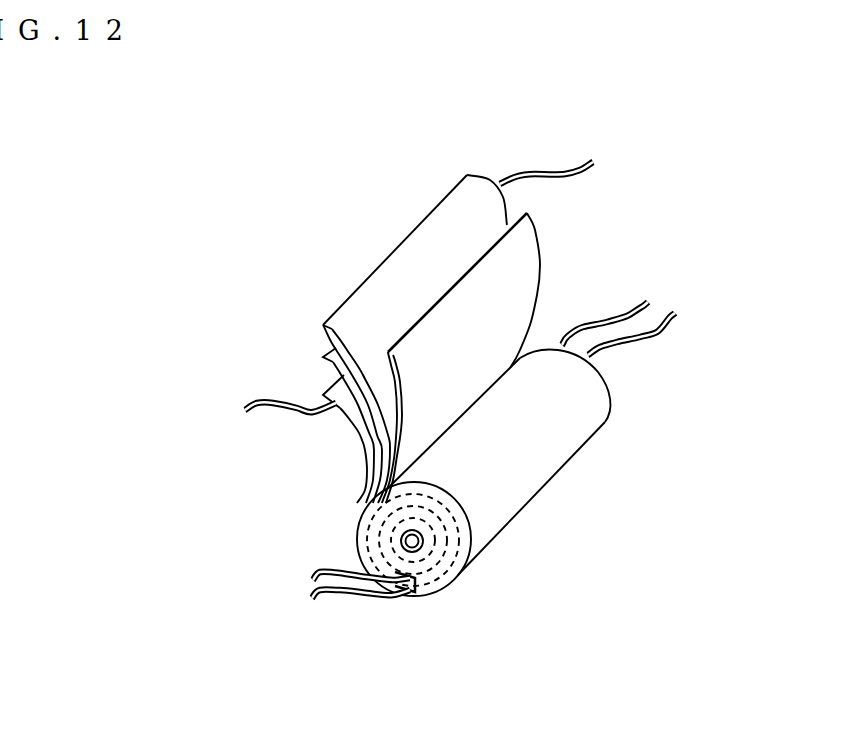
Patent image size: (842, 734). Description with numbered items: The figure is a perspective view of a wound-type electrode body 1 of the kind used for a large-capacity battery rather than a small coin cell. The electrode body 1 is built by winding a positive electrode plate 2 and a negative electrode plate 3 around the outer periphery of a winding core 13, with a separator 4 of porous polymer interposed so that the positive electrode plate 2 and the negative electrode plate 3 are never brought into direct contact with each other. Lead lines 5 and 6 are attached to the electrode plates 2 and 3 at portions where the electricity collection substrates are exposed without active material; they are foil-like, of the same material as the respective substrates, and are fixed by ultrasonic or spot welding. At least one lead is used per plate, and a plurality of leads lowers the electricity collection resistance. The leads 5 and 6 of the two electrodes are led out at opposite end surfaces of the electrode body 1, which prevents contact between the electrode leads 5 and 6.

The wound-type electrode body 1 is at (565, 489).
The positive electrode plate 2 is at (365, 437).
The negative electrode plate 3 is at (404, 262).
The separator 4 is at (322, 352).
The lead line 5 is at (262, 402).
The lead line 6 is at (550, 178).
The winding core 13 is at (421, 548).